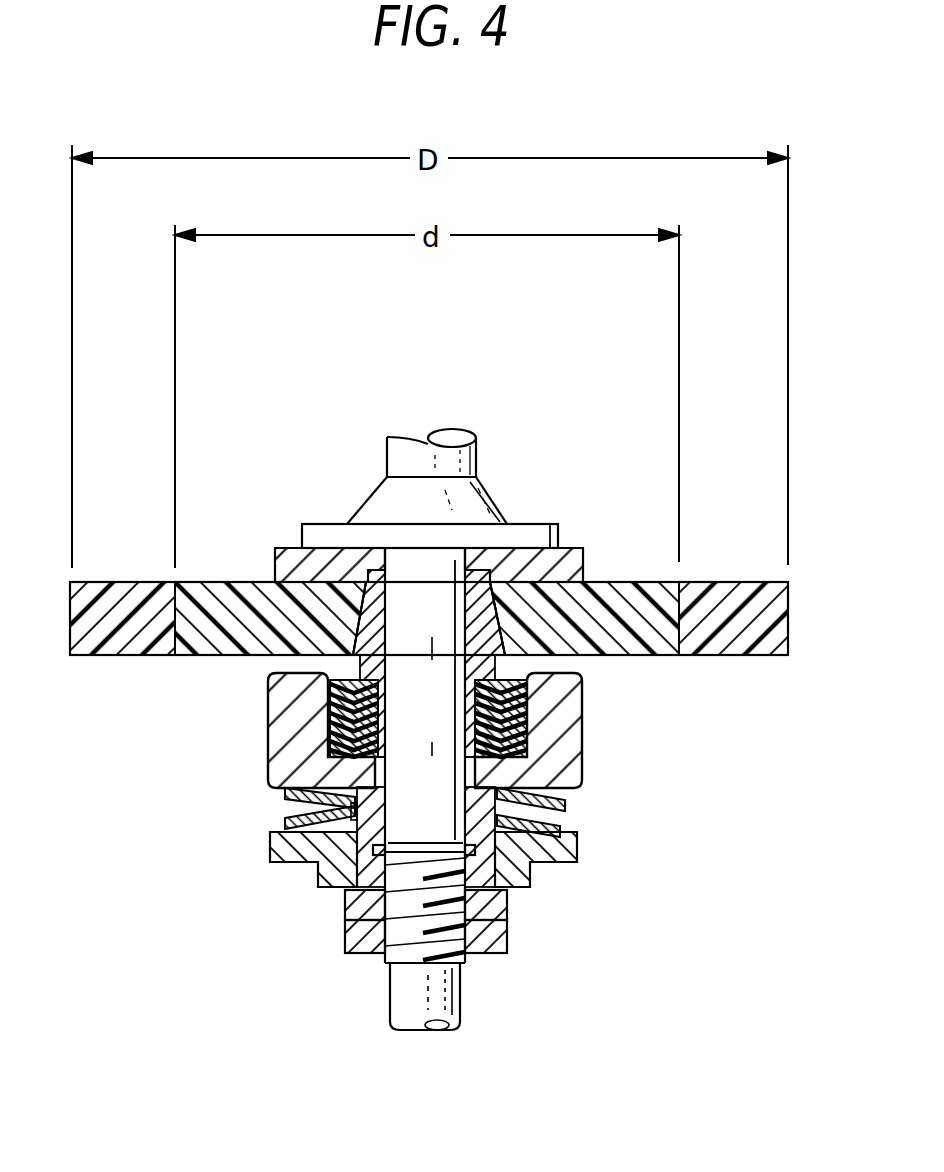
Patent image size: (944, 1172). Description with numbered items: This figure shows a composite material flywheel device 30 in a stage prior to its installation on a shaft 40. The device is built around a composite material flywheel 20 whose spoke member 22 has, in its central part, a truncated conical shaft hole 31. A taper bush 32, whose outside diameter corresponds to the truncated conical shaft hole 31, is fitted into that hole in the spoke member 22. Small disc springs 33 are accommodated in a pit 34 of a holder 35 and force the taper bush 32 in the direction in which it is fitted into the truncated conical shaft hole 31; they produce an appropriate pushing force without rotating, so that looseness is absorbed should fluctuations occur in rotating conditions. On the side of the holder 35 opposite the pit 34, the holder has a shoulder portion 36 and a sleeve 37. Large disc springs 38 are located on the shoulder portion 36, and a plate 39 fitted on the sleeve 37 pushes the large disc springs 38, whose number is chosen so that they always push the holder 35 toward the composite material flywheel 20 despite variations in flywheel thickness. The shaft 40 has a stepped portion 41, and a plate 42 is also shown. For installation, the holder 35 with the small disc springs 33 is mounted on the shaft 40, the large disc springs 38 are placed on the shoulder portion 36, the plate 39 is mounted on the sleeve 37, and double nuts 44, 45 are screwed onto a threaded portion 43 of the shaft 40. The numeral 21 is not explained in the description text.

The composite material flywheel 20 is at (429, 635).
The first plate portion 21 is at (130, 598).
The spoke member 22 is at (675, 580).
The composite material flywheel device 30 is at (574, 432).
The truncated conical shaft hole 31 is at (310, 652).
The taper bush 32 is at (483, 633).
The small disc springs 33 is at (338, 762).
The pit 34 is at (530, 730).
The holder 35 is at (468, 750).
The shoulder portion 36 is at (568, 797).
The sleeve 37 is at (505, 945).
The large disc springs 38 is at (300, 863).
The plate 39 is at (540, 868).
The shaft 40 is at (447, 455).
The stepped portion 41 is at (326, 537).
The plate 42 is at (288, 555).
The threaded portion 43 is at (383, 958).
The double nuts 44 is at (490, 957).
The double nuts 45 is at (468, 960).